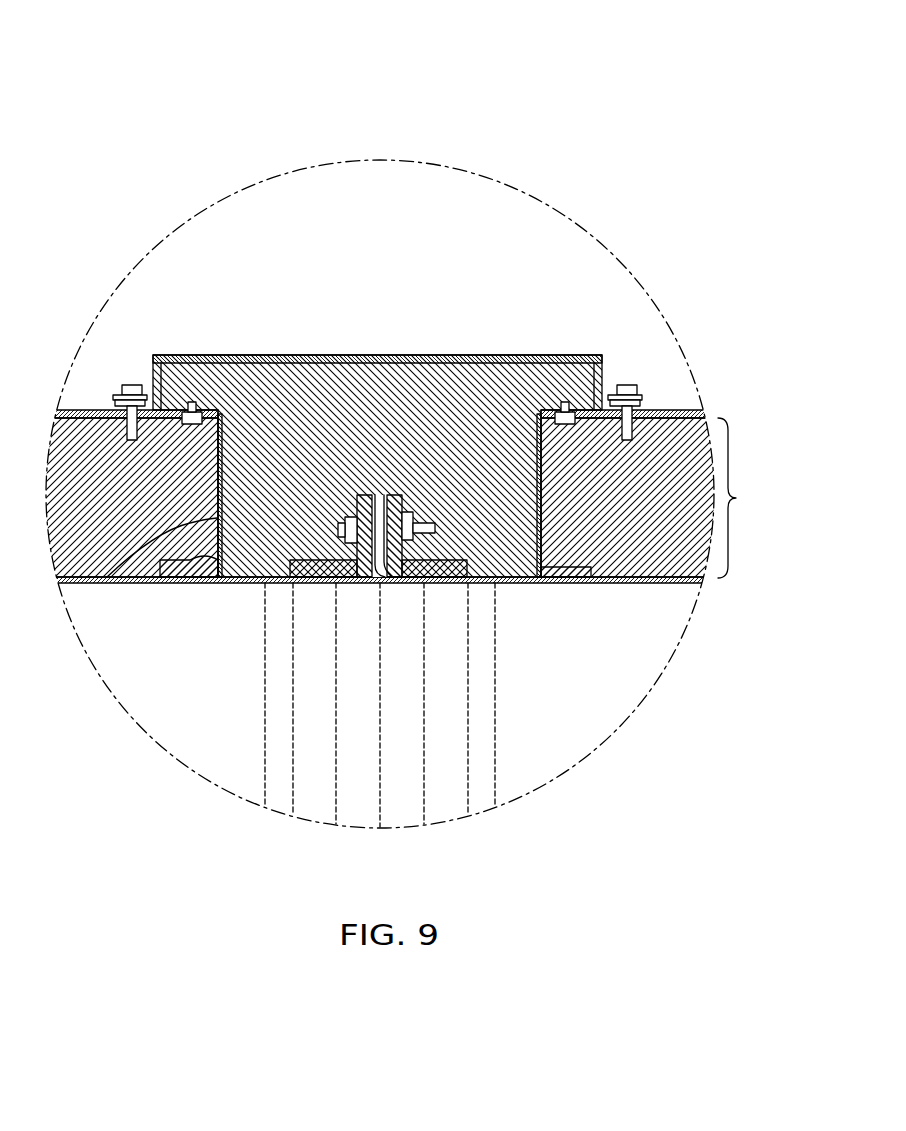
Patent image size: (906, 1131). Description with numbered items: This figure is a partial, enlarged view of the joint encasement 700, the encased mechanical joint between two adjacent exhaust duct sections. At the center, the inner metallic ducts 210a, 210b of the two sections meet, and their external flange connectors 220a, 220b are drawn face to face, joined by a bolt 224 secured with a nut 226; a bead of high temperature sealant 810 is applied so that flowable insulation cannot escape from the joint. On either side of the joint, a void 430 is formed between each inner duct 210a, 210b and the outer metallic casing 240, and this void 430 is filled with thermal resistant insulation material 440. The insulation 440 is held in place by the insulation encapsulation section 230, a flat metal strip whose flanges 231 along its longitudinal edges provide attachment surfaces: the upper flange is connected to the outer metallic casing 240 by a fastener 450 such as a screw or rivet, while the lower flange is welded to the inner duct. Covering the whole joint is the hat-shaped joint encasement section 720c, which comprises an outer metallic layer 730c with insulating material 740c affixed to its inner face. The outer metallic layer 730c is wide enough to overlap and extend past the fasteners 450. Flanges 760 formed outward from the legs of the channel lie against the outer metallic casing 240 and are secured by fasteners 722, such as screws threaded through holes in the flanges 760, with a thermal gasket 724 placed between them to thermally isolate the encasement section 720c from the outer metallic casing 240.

The joint encasement 700 is at (537, 93).
The joint encasement section 720c is at (268, 355).
The outer metallic layer 730c is at (372, 355).
The insulating material 740c is at (410, 457).
The high temperature sealant 810 is at (378, 495).
The flange 760 is at (128, 385).
The fastener 722 is at (130, 384).
The thermal gasket 724 is at (114, 404).
The outer metallic casing 240 is at (58, 410).
The fastener 450 is at (192, 408).
The void 430 is at (750, 498).
The thermal resistant insulation material 440 is at (648, 548).
The insulation encapsulation section 230 is at (115, 584).
The flange 231 is at (152, 578).
The bolt 224 is at (238, 584).
The external flange connector 220b is at (313, 584).
The external flange connector 220a is at (443, 583).
The nut 226 is at (413, 584).
The inner metallic duct 210a is at (62, 585).
The inner metallic duct 210b is at (642, 584).